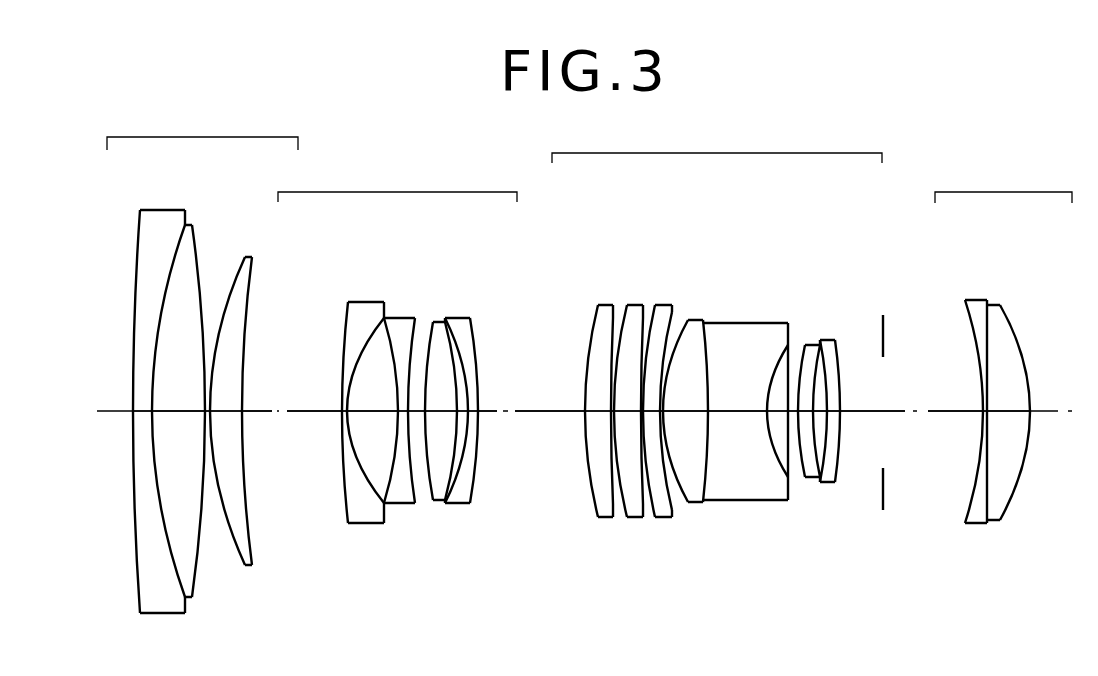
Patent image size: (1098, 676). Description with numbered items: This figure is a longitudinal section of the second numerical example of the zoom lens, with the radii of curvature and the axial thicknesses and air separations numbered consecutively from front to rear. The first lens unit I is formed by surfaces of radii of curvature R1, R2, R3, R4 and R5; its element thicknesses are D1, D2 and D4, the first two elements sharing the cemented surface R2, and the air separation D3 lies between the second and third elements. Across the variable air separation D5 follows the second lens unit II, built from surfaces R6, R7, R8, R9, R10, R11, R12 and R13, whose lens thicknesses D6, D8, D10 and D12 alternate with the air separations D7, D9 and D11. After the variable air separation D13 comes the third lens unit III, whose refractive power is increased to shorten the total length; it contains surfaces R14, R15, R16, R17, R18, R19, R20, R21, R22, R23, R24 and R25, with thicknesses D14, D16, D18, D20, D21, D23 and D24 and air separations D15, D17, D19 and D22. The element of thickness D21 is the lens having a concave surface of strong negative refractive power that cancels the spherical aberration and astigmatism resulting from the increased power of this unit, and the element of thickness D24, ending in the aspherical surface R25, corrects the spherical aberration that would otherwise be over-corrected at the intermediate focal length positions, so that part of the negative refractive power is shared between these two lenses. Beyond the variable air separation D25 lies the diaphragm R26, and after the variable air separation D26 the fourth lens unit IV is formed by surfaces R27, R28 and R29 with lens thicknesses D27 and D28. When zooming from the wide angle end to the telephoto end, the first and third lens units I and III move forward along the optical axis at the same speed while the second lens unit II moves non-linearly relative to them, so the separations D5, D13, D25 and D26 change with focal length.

The first lens unit I is at (202, 124).
The second lens unit II is at (397, 181).
The third lens unit III is at (717, 143).
The fourth lens unit IV is at (1003, 182).
The radius of curvature of first surface R1 is at (141, 216).
The radius of curvature of second surface R2 is at (181, 240).
The radius of curvature of third surface R3 is at (193, 233).
The radius of curvature of fourth surface R4 is at (244, 258).
The radius of curvature of fifth surface R5 is at (253, 268).
The radius of curvature of sixth surface R6 is at (345, 306).
The radius of curvature of seventh surface R7 is at (363, 302).
The radius of curvature of eighth surface R8 is at (383, 302).
The radius of curvature of ninth surface R9 is at (405, 318).
The radius of curvature of tenth surface R10 is at (432, 322).
The radius of curvature of eleventh surface R11 is at (445, 320).
The radius of curvature of twelfth surface R12 is at (446, 318).
The radius of curvature of thirteenth surface R13 is at (471, 318).
The radius of curvature of fourteenth surface R14 is at (596, 309).
The radius of curvature of fifteenth surface R15 is at (613, 304).
The radius of curvature of sixteenth surface R16 is at (626, 305).
The radius of curvature of seventeenth surface R17 is at (642, 304).
The radius of curvature of eighteenth surface R18 is at (656, 304).
The radius of curvature of nineteenth surface R19 is at (673, 304).
The radius of curvature of twentieth surface R20 is at (689, 319).
The radius of curvature of twenty-first surface R21 is at (704, 321).
The radius of curvature of twenty-second surface R22 is at (779, 323).
The radius of curvature of twenty-third surface R23 is at (795, 326).
The radius of curvature of twenty-fourth surface R24 is at (807, 343).
The radius of curvature of twenty-fifth surface R25 is at (834, 340).
The diaphragm R26 is at (885, 327).
The radius of curvature of twenty-seventh surface R27 is at (966, 322).
The radius of curvature of twenty-eighth surface R28 is at (988, 318).
The radius of curvature of twenty-ninth surface R29 is at (1009, 316).
The axial thickness D1 is at (145, 413).
The axial thickness D2 is at (173, 413).
The air separation D3 is at (207, 415).
The axial thickness D4 is at (223, 413).
The variable air separation D5 is at (293, 413).
The axial thickness D6 is at (343, 414).
The air separation D7 is at (371, 414).
The axial thickness D8 is at (403, 414).
The air separation D9 is at (417, 414).
The axial thickness D10 is at (432, 414).
The air separation D11 is at (463, 414).
The axial thickness D12 is at (474, 414).
The variable air separation D13 is at (536, 414).
The axial thickness D14 is at (598, 414).
The air separation D15 is at (617, 414).
The axial thickness D16 is at (627, 414).
The air separation D17 is at (645, 414).
The axial thickness D18 is at (662, 414).
The air separation D19 is at (686, 414).
The axial thickness D20 is at (697, 414).
The axial thickness D21 is at (736, 414).
The air separation D22 is at (782, 414).
The axial thickness D23 is at (796, 414).
The axial thickness D24 is at (833, 414).
The variable air separation D25 is at (857, 414).
The variable air separation D26 is at (928, 414).
The axial thickness D27 is at (985, 414).
The axial thickness D28 is at (1013, 414).